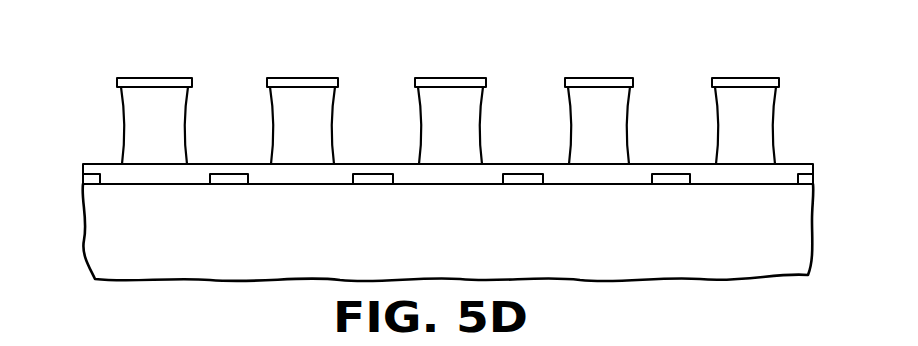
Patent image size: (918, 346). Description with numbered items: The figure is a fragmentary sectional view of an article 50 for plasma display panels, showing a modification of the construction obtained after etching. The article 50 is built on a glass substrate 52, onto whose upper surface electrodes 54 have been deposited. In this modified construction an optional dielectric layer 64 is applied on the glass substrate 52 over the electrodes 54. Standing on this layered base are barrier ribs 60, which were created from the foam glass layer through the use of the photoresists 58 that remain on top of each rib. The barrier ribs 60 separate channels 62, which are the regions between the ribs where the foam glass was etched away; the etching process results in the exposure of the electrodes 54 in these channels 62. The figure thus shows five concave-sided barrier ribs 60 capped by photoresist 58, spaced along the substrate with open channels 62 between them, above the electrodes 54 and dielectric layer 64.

The article 50 is at (63, 213).
The glass substrate 52 is at (130, 263).
The electrodes 54 is at (378, 183).
The photoresist 58 is at (155, 80).
The barrier ribs 60 is at (142, 133).
The channels 62 is at (223, 108).
The dielectric layer 64 is at (160, 175).